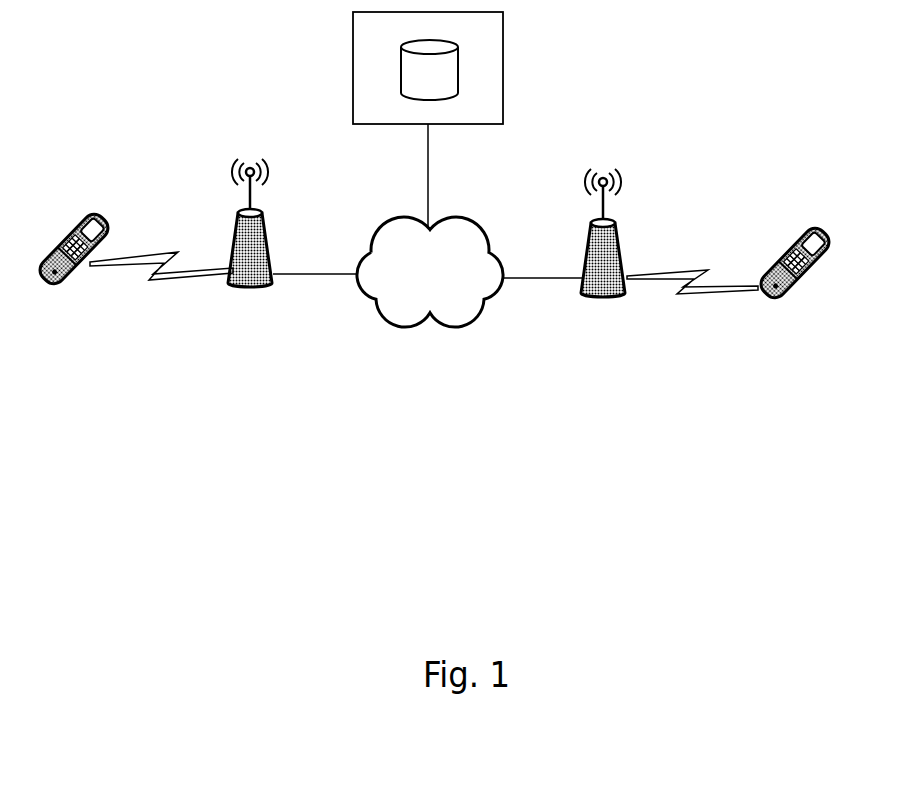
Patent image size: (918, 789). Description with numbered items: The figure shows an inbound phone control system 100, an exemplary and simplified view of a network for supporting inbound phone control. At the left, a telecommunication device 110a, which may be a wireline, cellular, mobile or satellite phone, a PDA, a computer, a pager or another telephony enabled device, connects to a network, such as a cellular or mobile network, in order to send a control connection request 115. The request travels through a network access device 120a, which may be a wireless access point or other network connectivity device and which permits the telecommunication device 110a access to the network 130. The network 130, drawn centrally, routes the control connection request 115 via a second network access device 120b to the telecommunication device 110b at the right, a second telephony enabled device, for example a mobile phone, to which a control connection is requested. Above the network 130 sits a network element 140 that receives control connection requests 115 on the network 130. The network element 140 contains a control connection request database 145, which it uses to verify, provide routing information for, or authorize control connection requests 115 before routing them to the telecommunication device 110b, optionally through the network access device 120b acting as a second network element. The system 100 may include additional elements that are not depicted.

The inbound phone control system 100 is at (781, 90).
The telecommunication device 110a is at (62, 288).
The telecommunication device 110b is at (783, 303).
The control connection request 115 is at (152, 281).
The network access device 120a is at (260, 290).
The network access device 120b is at (607, 297).
The network 130 is at (448, 325).
The network element 140 is at (503, 30).
The control connection request database 145 is at (458, 62).